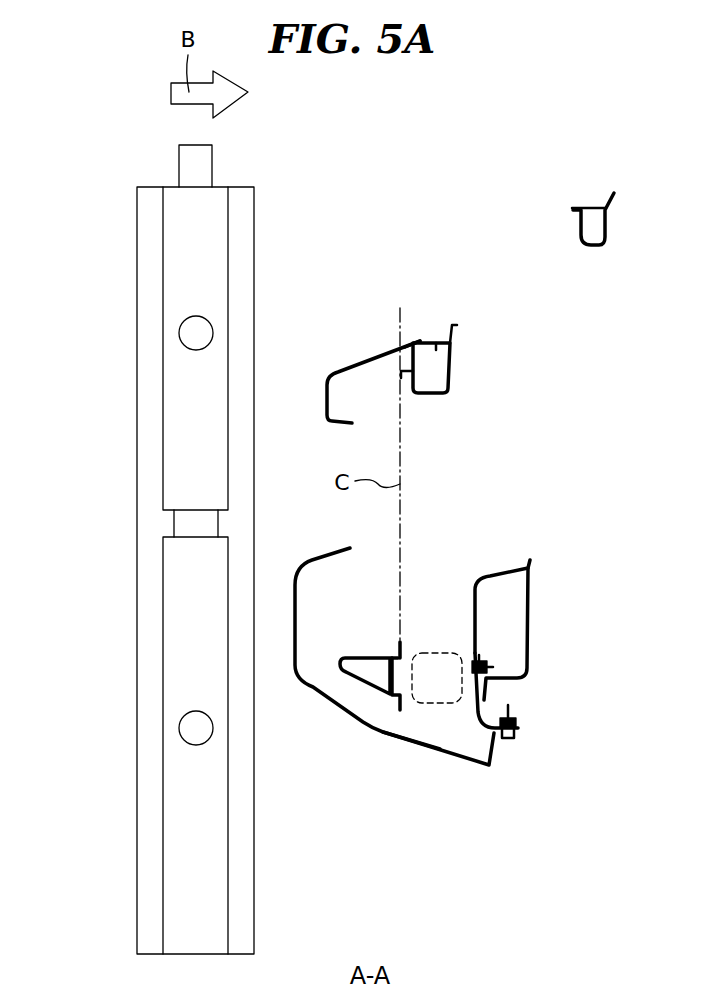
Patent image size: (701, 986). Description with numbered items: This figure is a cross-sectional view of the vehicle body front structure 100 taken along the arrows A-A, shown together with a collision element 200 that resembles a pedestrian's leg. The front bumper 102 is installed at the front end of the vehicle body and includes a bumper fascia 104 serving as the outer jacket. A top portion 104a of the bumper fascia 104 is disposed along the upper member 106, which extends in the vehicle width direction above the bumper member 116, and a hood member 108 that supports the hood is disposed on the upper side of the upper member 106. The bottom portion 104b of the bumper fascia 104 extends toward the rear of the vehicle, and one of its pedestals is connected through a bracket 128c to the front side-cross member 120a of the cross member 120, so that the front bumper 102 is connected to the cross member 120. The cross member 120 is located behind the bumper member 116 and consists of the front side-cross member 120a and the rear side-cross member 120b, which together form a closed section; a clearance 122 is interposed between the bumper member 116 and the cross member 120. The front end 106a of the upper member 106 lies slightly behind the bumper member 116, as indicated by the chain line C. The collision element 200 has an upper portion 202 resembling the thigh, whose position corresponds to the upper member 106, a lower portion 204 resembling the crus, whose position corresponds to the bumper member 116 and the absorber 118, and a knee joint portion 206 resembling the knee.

The vehicle body front structure 100 is at (435, 216).
The front bumper 102 is at (336, 374).
The bumper fascia 104 is at (383, 526).
The top portion 104a is at (418, 343).
The bottom portion 104b is at (382, 733).
The upper member 106 is at (470, 390).
The front end 106a is at (403, 378).
The hood member 108 is at (590, 205).
The bumper member 116 is at (397, 655).
The absorber 118 is at (357, 665).
The cross member 120 is at (557, 594).
The front side-cross member 120a is at (497, 575).
The rear side-cross member 120b is at (530, 625).
The clearance 122 is at (449, 705).
The bracket 128c is at (487, 712).
The collision element 200 is at (141, 549).
The upper portion 202 is at (172, 394).
The lower portion 204 is at (175, 645).
The knee joint portion 206 is at (182, 522).